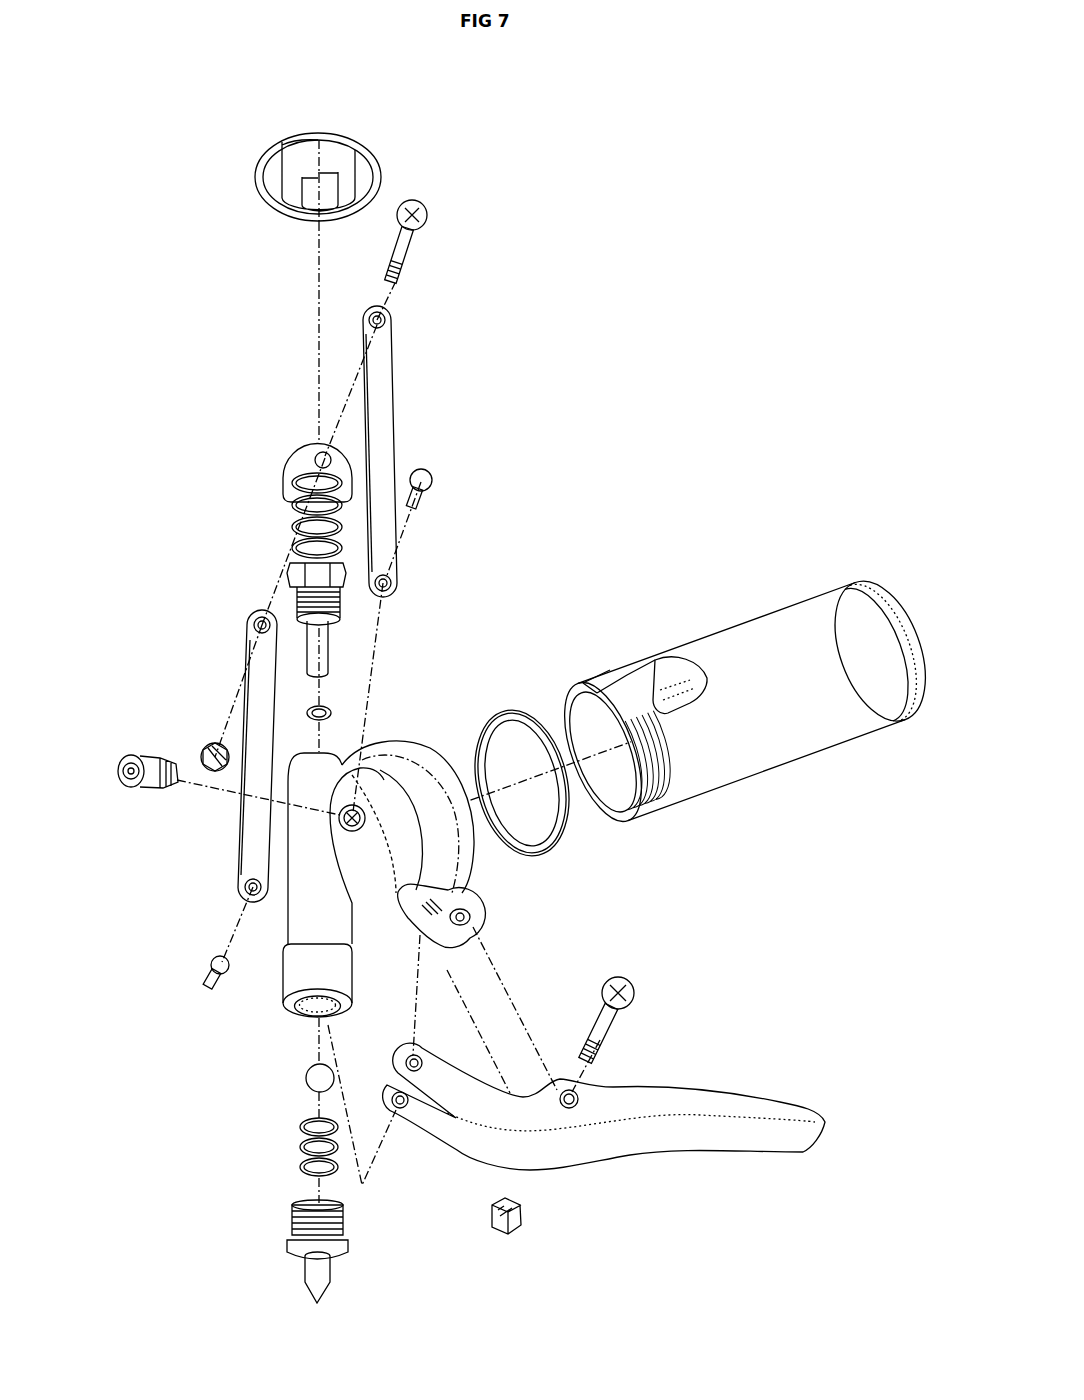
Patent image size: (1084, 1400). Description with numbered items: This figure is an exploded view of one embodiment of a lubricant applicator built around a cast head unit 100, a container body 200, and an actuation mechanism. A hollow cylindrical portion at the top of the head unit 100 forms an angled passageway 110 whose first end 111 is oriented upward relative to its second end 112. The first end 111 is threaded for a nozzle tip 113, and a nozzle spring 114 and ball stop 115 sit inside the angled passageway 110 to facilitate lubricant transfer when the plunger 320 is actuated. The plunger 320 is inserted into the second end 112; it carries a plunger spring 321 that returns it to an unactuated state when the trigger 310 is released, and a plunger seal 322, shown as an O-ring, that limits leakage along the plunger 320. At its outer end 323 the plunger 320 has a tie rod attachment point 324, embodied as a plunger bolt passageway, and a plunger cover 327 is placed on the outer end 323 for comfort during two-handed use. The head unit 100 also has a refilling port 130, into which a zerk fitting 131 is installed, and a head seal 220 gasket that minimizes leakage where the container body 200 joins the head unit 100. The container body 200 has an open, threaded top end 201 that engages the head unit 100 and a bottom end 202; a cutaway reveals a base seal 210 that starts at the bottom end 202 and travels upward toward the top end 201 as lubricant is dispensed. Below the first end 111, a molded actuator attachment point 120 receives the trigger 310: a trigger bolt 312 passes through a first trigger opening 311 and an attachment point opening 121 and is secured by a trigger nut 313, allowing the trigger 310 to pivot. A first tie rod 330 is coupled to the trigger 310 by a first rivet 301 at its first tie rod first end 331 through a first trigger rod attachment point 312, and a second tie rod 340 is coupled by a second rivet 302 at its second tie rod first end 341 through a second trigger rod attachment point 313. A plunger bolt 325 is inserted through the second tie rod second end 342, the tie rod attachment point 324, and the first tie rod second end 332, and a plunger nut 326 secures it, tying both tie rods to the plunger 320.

The head unit 100 is at (427, 748).
The angled passageway 110 is at (213, 908).
The first end 111 is at (283, 1012).
The second end 112 is at (290, 762).
The nozzle tip 113 is at (330, 1278).
The nozzle spring 114 is at (298, 1137).
The ball stop 115 is at (304, 1083).
The molded actuator attachment point 120 is at (478, 988).
The attachment point opening 121 is at (492, 905).
The refilling port 130 is at (340, 824).
The zerk fitting 131 is at (137, 750).
The container body 200 is at (704, 697).
The top end 201 is at (618, 746).
The bottom end 202 is at (880, 651).
The base seal 210 is at (652, 665).
The head seal 220 is at (507, 722).
The first rivet 301 is at (215, 985).
The second rivet 302 is at (432, 468).
The trigger 310 is at (576, 1131).
The first trigger opening 311 is at (575, 1106).
The trigger bolt 312 is at (637, 990).
The trigger nut 313 is at (423, 1058).
The plunger 320 is at (326, 637).
The plunger spring 321 is at (292, 526).
The plunger seal 322 is at (306, 712).
The outer end 323 is at (286, 442).
The tie rod attachment point 324 is at (320, 457).
The plunger bolt 325 is at (430, 217).
The plunger nut 326 is at (211, 752).
The plunger cover 327 is at (237, 183).
The first tie rod 330 is at (225, 820).
The first tie rod first end 331 is at (244, 890).
The first tie rod second end 332 is at (222, 710).
The second tie rod 340 is at (431, 547).
The second tie rod first end 341 is at (400, 578).
The second tie rod second end 342 is at (392, 322).